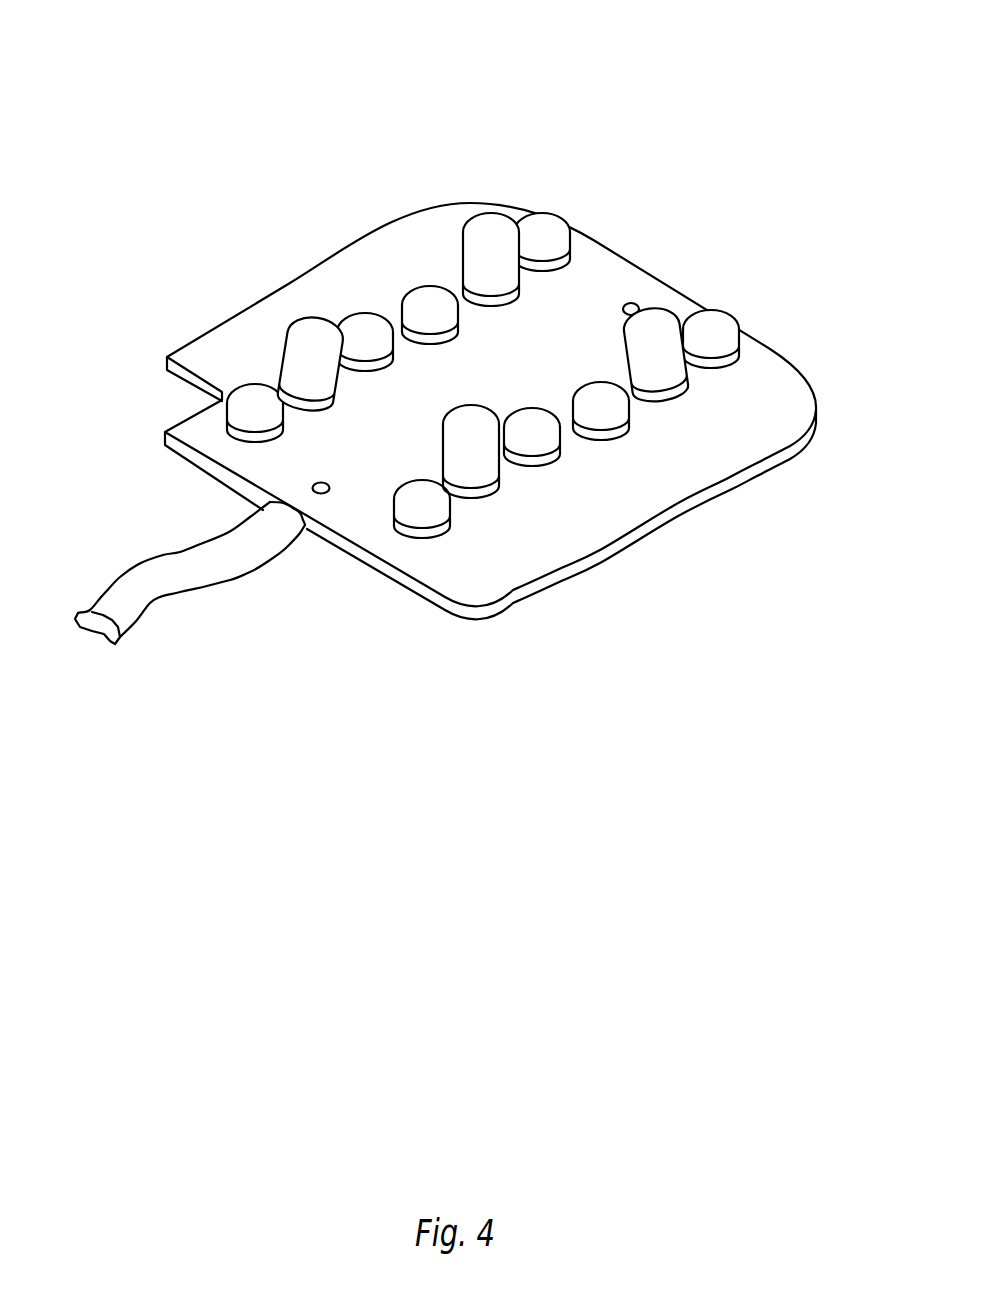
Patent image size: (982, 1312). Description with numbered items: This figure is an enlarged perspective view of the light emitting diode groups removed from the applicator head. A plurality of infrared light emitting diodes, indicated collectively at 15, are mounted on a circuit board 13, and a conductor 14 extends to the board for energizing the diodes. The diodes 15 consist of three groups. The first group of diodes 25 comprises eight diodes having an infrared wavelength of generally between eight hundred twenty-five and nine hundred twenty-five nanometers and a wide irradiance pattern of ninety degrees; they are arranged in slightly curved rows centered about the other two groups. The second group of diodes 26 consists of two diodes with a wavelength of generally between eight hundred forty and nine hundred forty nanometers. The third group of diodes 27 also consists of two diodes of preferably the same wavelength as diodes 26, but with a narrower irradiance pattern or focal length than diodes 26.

The circuit board 13 is at (600, 530).
The conductor 14 is at (160, 552).
The infrared light emitting diodes 15 is at (456, 391).
The first group of diodes 25 is at (427, 298).
The second group of diodes 26 is at (317, 338).
The third group of diodes 27 is at (493, 225).